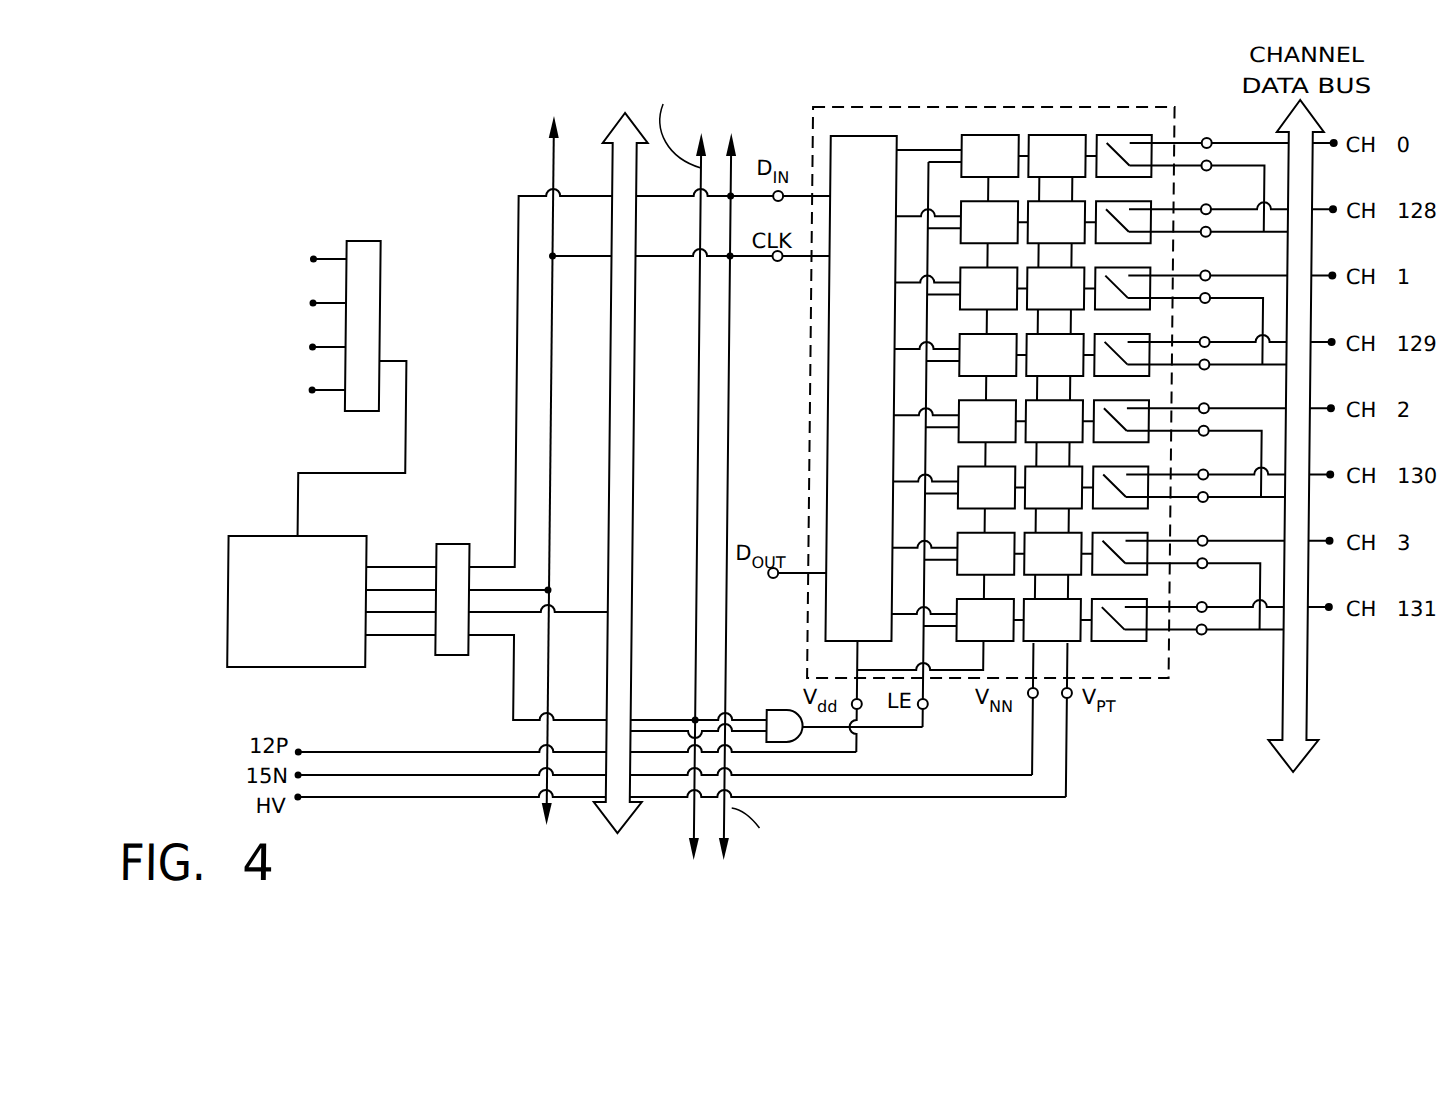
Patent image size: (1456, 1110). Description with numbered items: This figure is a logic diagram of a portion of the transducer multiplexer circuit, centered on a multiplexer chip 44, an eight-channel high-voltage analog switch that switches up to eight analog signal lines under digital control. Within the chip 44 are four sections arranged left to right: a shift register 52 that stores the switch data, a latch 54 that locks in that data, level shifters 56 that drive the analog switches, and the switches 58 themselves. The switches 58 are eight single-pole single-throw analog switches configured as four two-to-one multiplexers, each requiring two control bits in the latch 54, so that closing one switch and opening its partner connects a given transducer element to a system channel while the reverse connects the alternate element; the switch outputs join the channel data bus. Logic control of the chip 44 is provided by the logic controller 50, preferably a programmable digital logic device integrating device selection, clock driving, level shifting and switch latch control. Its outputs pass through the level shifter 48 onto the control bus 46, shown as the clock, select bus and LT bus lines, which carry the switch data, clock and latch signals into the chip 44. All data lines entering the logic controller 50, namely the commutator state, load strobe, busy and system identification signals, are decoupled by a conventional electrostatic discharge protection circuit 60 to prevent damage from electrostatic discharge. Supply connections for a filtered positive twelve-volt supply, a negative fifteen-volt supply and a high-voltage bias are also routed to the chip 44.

The multiplexer chip 44 is at (1186, 680).
The control bus 46 is at (802, 97).
The level shifter 48 is at (452, 655).
The logic controller 50 is at (305, 667).
The shift register 52 is at (860, 388).
The latch 54 is at (988, 125).
The level shifters 56 is at (1056, 125).
The switches 58 is at (1131, 125).
The electrostatic discharge protection circuit 60 is at (362, 411).